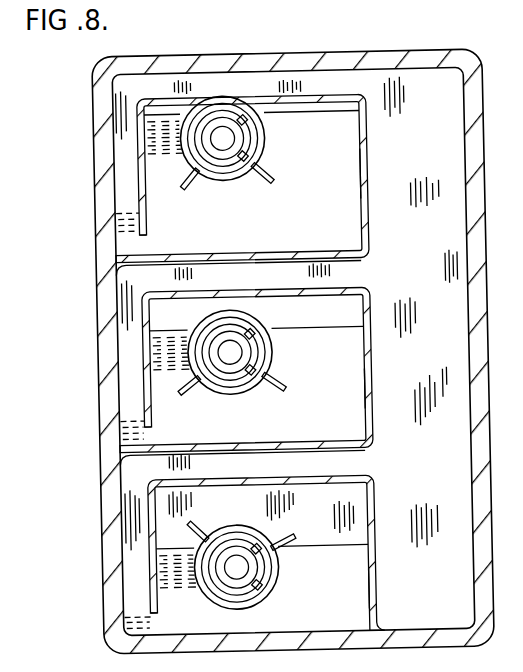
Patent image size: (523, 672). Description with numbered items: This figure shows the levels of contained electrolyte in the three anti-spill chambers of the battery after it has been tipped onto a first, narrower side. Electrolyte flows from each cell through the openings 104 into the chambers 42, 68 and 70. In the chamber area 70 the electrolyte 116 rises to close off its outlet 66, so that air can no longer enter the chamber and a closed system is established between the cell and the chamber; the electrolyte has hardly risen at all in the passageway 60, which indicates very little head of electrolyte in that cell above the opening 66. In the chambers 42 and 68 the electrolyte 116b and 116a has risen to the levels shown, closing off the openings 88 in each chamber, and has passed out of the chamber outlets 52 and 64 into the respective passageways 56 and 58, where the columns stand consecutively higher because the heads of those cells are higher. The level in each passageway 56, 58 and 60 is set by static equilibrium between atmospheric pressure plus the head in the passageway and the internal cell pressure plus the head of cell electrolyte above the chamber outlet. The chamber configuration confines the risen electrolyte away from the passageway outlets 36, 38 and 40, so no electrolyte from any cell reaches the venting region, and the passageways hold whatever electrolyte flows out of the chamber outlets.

The passageway outlet 36 is at (361, 86).
The passageway outlet 38 is at (362, 279).
The passageway outlet 40 is at (361, 468).
The chamber 42 is at (370, 99).
The chamber 68 is at (366, 309).
The chamber area 70 is at (358, 524).
The chamber outlet 52 is at (146, 238).
The chamber outlet 64 is at (151, 435).
The chamber outlet 66 is at (146, 620).
The passageway 56 is at (126, 210).
The passageway 58 is at (122, 417).
The passageway 60 is at (135, 605).
The opening 88 is at (243, 158).
The opening 104 is at (231, 110).
The electrolyte 116 is at (358, 594).
The electrolyte 116a is at (360, 395).
The electrolyte 116b is at (356, 180).